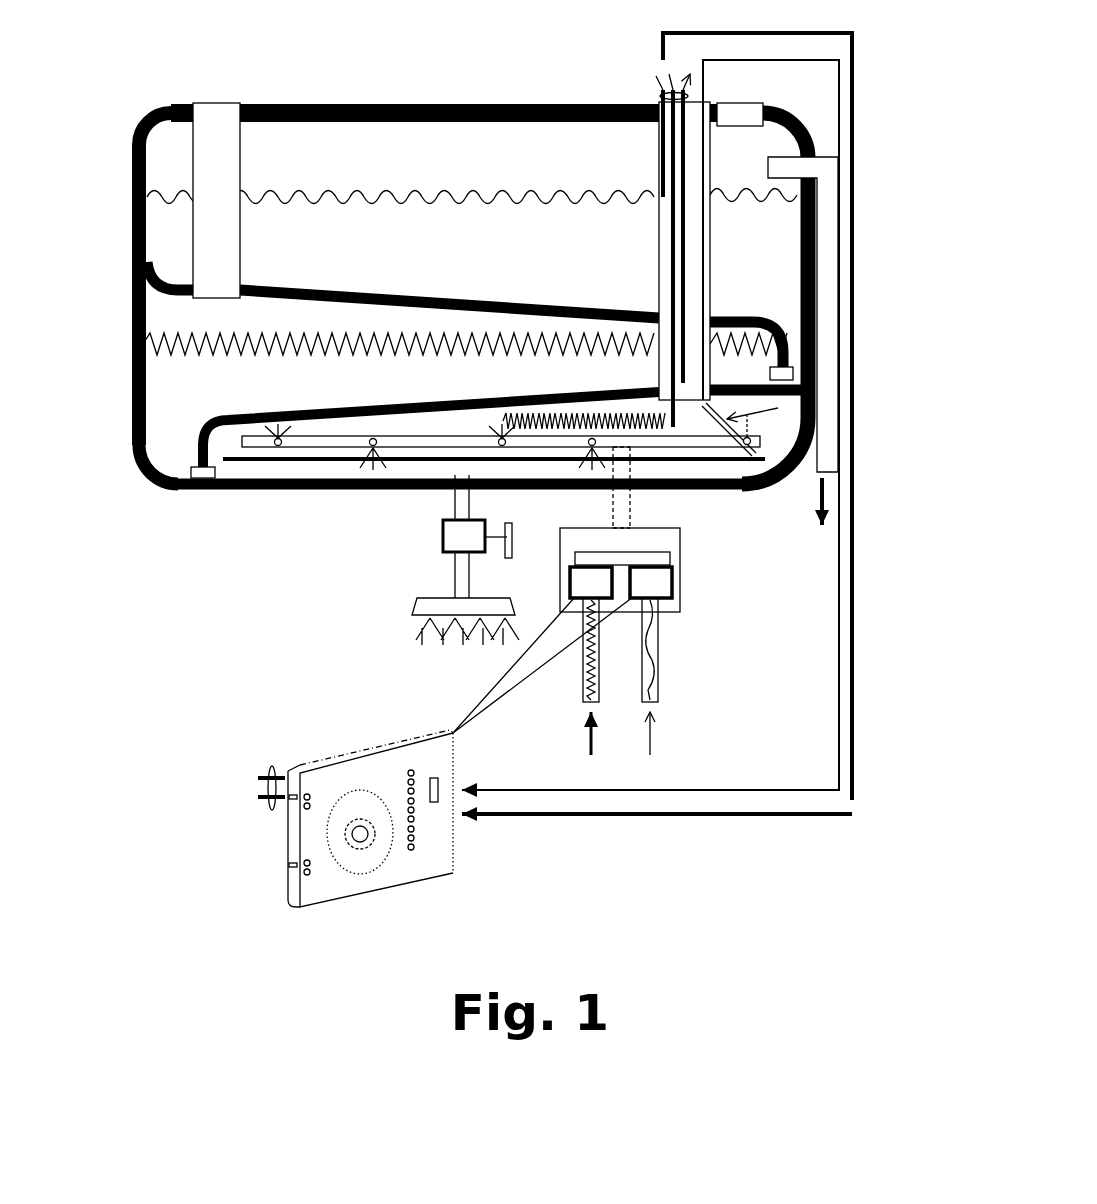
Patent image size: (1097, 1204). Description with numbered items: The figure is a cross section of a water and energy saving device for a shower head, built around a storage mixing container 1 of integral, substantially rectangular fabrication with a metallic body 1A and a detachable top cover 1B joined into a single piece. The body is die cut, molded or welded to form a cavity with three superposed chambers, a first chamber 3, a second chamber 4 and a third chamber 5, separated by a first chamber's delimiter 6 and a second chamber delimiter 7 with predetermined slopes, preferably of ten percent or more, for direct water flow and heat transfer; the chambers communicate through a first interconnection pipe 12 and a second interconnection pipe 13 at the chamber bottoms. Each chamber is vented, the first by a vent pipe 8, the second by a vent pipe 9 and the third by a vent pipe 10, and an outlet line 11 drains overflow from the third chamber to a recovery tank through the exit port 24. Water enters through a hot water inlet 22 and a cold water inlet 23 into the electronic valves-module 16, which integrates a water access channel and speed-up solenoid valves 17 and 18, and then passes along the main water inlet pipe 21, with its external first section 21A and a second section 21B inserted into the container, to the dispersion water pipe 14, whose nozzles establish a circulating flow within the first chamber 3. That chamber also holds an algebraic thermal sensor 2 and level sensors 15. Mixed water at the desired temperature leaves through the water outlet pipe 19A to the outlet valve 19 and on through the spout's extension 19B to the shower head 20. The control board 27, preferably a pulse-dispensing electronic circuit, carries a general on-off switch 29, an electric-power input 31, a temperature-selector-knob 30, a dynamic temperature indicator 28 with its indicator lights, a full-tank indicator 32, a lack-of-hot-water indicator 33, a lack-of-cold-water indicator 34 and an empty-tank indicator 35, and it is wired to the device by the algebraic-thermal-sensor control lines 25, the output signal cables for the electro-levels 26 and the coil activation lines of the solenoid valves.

The mixing container 1 is at (337, 490).
The metallic body 1A is at (236, 491).
The detachable top cover 1B is at (327, 103).
The algebraic thermal sensor 2 is at (672, 463).
The first chamber 3 is at (454, 427).
The second chamber 4 is at (271, 371).
The third chamber 5 is at (376, 250).
The first chamber's delimiter 6 is at (349, 423).
The second chamber delimiter 7 is at (466, 314).
The first chamber's vent pipe 8 is at (656, 103).
The second chamber's vent pipe 9 is at (212, 104).
The third chamber's vent pipe 10 is at (739, 101).
The outlet line 11 is at (830, 156).
The first interconnection pipe 12 is at (199, 471).
The second interconnection pipe 13 is at (790, 372).
The dispersion water pipe 14 is at (706, 464).
The level sensors 15 is at (664, 94).
The electronic valves-module 16 is at (656, 535).
The hot-water electric solenoid valve 17 is at (590, 581).
The cold-water electric solenoid valve 18 is at (652, 587).
The outlet valve 19 is at (465, 534).
The water outlet pipe 19A is at (462, 488).
The spout's extension 19B is at (461, 578).
The shower head 20 is at (448, 612).
The main water inlet pipe 21 is at (636, 487).
The external first section 21A is at (620, 470).
The second section 21B is at (620, 508).
The hot water inlet 22 is at (579, 676).
The cold water inlet 23 is at (663, 676).
The exit port 24 is at (828, 492).
The algebraic-thermal-sensor control lines 25 is at (735, 414).
The output signal cables for the electro-levels 26 is at (657, 423).
The control board 27 is at (333, 751).
The dynamic temperature indicator 28 is at (418, 850).
The general on-off switch 29 is at (440, 780).
The temperature-selector-knob 30 is at (380, 862).
The electric-power input 31 is at (272, 762).
The full-tank indicator 32 is at (296, 799).
The lack-of-hot-water indicator 33 is at (303, 811).
The lack-of-cold-water indicator 34 is at (296, 866).
The empty-tank indicator 35 is at (303, 876).